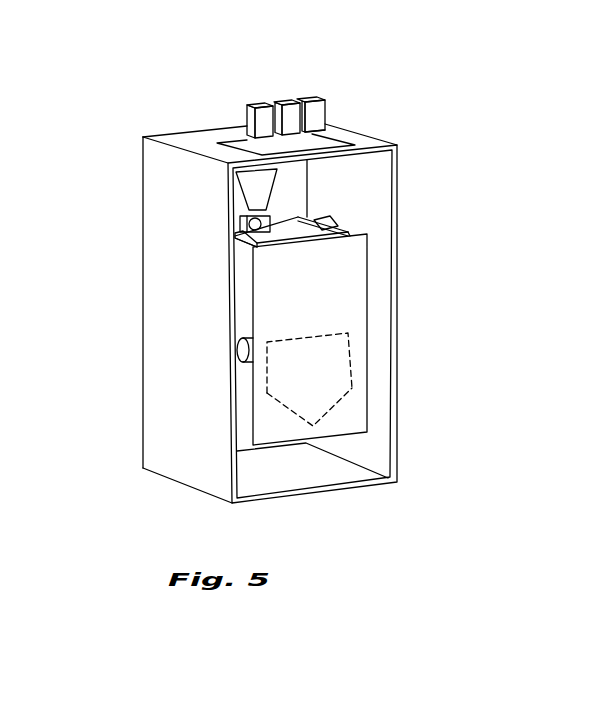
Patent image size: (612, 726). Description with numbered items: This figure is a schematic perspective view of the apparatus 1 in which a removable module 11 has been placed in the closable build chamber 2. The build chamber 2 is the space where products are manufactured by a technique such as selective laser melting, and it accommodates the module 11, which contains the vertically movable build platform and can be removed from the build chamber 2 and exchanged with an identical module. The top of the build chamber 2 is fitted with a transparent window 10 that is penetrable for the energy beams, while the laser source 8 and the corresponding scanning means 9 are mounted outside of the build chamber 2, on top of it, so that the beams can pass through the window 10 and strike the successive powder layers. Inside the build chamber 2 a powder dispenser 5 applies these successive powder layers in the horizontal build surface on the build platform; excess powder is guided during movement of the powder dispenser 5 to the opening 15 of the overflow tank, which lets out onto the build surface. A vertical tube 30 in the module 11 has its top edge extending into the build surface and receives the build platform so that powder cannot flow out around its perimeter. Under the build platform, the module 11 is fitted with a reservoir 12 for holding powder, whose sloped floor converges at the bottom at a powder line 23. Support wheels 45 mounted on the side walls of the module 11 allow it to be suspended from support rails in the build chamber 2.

The apparatus 1 is at (413, 144).
The build chamber 2 is at (378, 382).
The powder dispenser 5 is at (240, 220).
The laser source 8 is at (316, 112).
The scanning means 9 is at (320, 117).
The transparent window 10 is at (245, 143).
The module 11 is at (322, 284).
The reservoir 12 is at (339, 403).
The opening 15 is at (235, 237).
The powder line 23 is at (311, 400).
The vertical tube 30 is at (350, 231).
The support wheels 45 is at (237, 352).